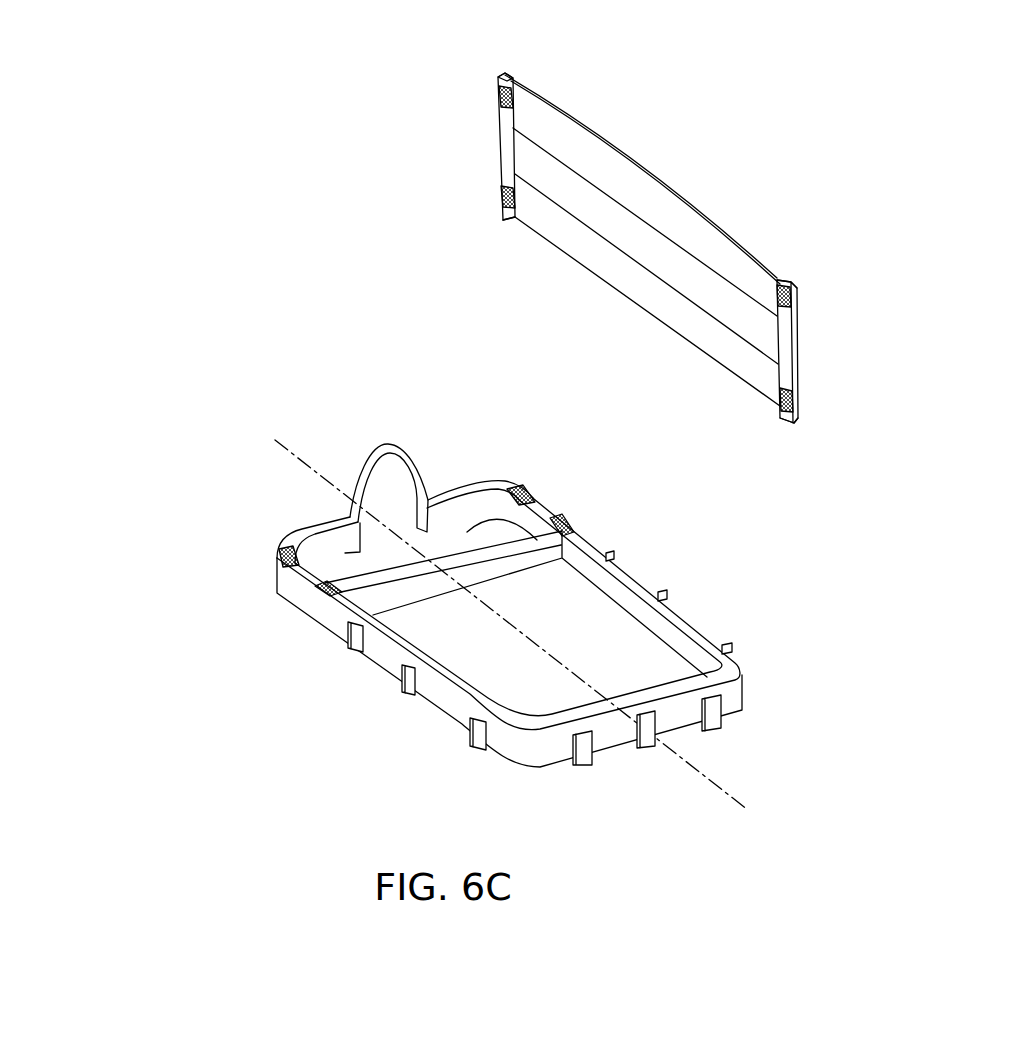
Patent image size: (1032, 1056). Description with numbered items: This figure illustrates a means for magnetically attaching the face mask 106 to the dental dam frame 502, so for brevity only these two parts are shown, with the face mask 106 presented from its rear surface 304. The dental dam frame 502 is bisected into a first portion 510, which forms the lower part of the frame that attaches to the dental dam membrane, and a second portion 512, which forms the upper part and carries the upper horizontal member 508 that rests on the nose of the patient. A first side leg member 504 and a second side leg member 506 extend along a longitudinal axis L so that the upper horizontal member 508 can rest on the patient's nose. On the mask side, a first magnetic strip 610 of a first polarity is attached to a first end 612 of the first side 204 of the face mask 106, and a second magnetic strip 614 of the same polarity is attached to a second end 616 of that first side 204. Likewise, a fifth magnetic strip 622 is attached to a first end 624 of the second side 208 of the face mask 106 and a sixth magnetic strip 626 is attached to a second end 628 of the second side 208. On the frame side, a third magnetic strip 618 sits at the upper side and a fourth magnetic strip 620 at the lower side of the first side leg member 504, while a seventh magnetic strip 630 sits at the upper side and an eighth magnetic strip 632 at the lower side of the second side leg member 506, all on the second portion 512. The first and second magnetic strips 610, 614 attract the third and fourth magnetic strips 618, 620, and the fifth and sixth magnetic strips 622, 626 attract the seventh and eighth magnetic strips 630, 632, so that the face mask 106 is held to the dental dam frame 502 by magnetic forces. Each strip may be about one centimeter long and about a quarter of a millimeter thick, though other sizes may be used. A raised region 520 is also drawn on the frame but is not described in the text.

The face mask 106 is at (666, 259).
The rear surface 304 is at (585, 252).
The second side 208 is at (498, 150).
The first side 204 is at (800, 358).
The first end 624 is at (504, 73).
The fifth magnetic strip 622 is at (498, 88).
The sixth magnetic strip 626 is at (500, 195).
The second end 628 is at (505, 222).
The first end 612 is at (783, 280).
The first magnetic strip 610 is at (785, 297).
The second magnetic strip 614 is at (778, 405).
The second end 616 is at (781, 428).
The dental dam frame 502 is at (390, 586).
The longitudinal axis L is at (310, 467).
The first side leg member 504 is at (352, 652).
The second side leg member 506 is at (688, 629).
The upper horizontal member 508 is at (320, 527).
The first portion 510 is at (491, 682).
The second portion 512 is at (346, 554).
The platform 520 is at (488, 543).
The third magnetic strip 618 is at (281, 555).
The fourth magnetic strip 620 is at (322, 590).
The seventh magnetic strip 630 is at (530, 488).
The eighth magnetic strip 632 is at (574, 518).